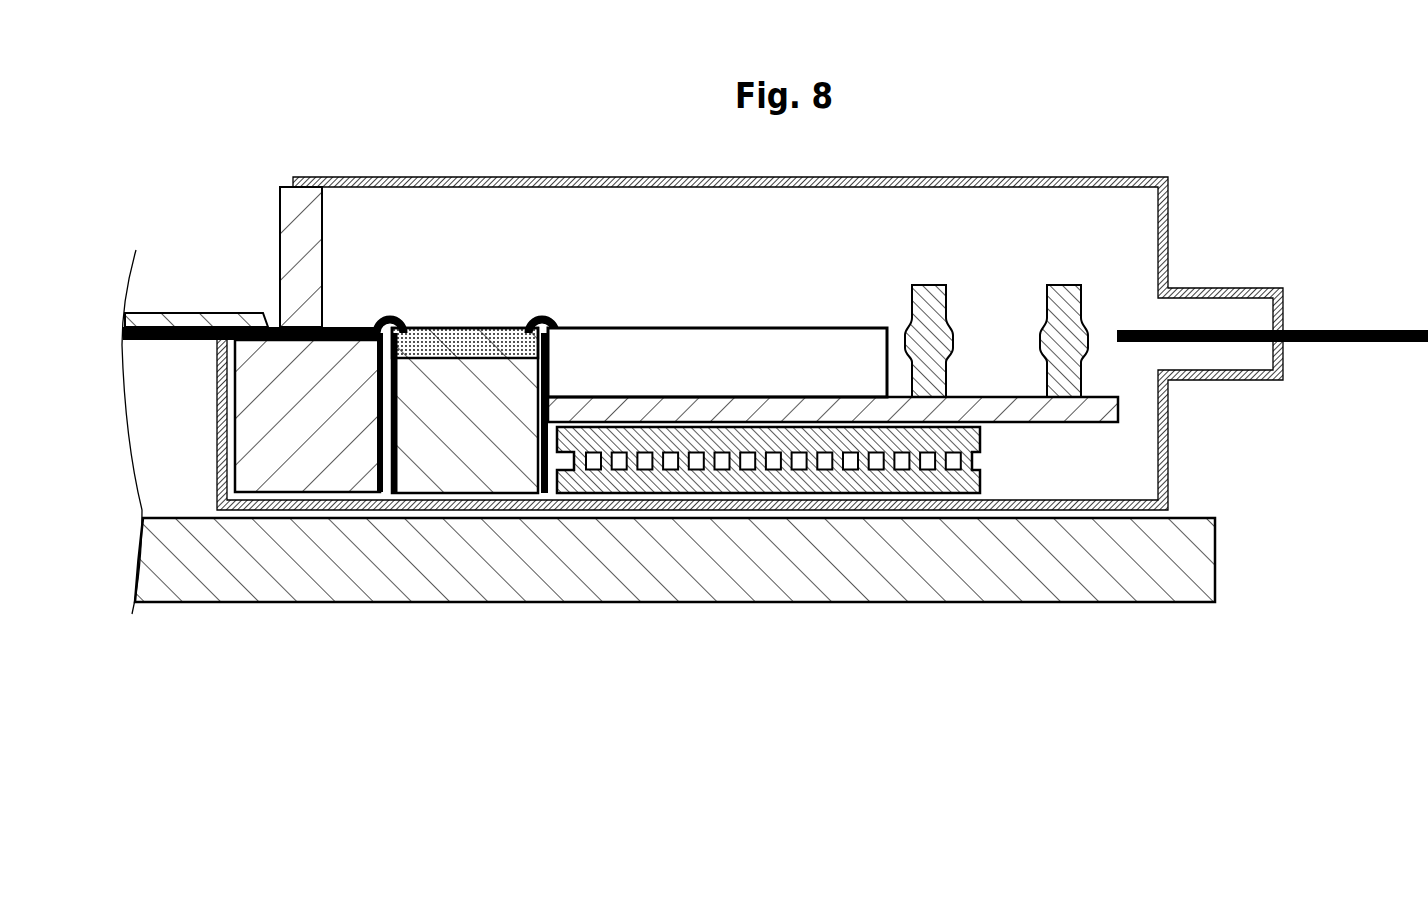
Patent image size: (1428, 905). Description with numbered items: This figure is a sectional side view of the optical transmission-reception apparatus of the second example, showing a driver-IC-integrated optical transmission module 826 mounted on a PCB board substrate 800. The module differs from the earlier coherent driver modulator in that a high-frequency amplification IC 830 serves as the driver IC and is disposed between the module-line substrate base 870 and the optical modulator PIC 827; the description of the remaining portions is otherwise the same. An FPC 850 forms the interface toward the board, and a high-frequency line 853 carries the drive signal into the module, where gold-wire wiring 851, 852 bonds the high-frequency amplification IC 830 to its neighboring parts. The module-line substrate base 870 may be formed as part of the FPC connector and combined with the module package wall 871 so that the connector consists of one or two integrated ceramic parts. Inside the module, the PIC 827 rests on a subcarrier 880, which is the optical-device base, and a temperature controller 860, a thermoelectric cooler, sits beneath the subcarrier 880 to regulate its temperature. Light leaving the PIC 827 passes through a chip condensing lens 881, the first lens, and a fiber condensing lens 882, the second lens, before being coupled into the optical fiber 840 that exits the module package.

The PCB board substrate 800 is at (1194, 518).
The driver-IC-integrated optical transmission module 826 is at (1195, 190).
The PIC 827 is at (727, 328).
The high-frequency amplification IC 830 is at (487, 328).
The optical fiber 840 is at (1395, 328).
The FPC 850 is at (178, 317).
The gold-wire wiring 851 is at (543, 312).
The gold-wire wiring 852 is at (390, 312).
The high-frequency line 853 is at (340, 333).
The temperature controller 860 is at (982, 462).
The module-line substrate base 870 is at (247, 413).
The module package wall 871 is at (282, 203).
The subcarrier 880 is at (1103, 423).
The chip condensing lens 881 is at (930, 285).
The fiber condensing lens 882 is at (1060, 285).